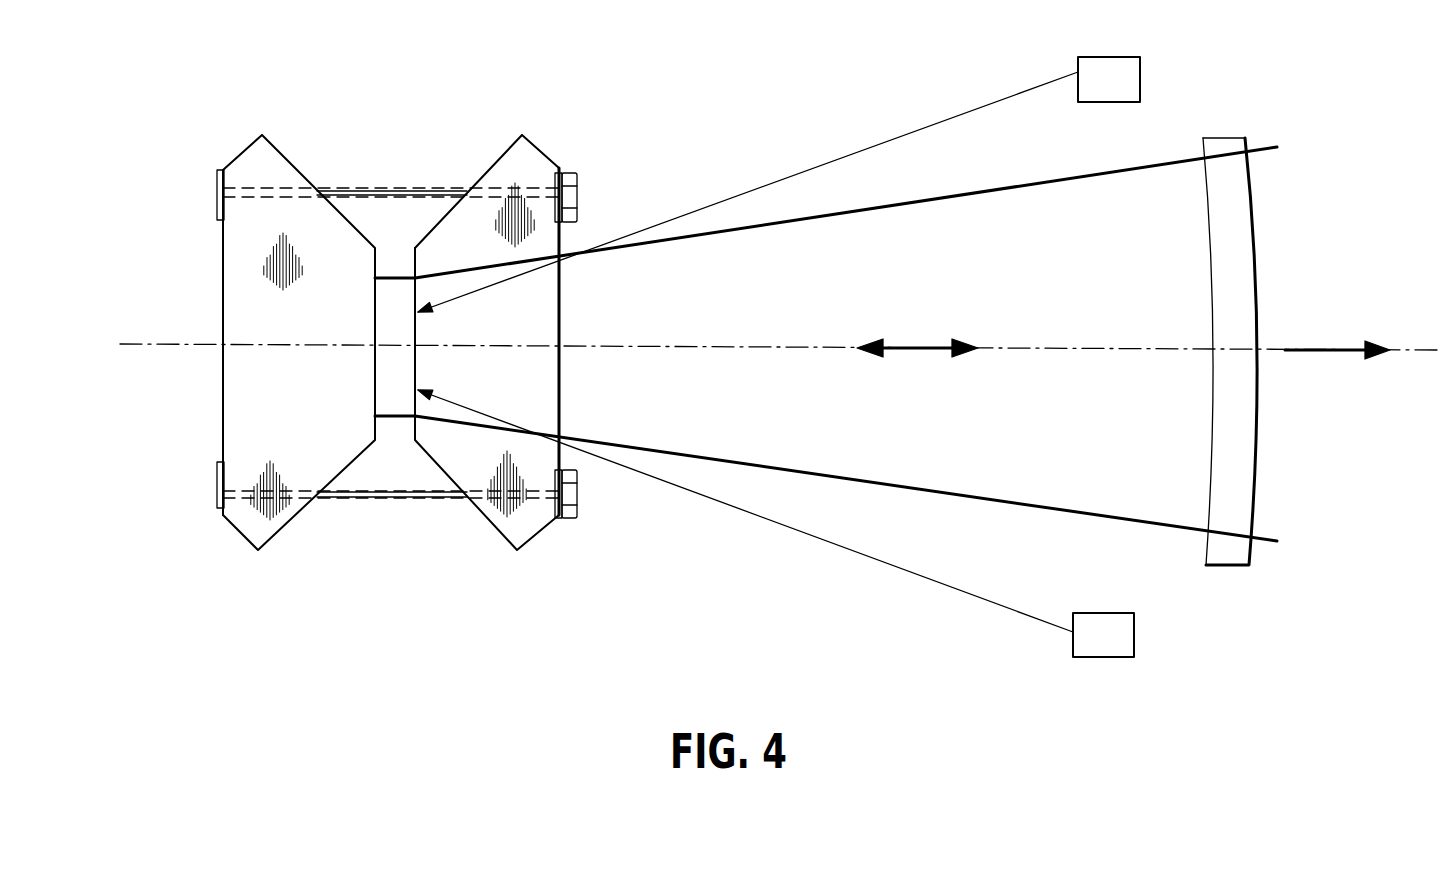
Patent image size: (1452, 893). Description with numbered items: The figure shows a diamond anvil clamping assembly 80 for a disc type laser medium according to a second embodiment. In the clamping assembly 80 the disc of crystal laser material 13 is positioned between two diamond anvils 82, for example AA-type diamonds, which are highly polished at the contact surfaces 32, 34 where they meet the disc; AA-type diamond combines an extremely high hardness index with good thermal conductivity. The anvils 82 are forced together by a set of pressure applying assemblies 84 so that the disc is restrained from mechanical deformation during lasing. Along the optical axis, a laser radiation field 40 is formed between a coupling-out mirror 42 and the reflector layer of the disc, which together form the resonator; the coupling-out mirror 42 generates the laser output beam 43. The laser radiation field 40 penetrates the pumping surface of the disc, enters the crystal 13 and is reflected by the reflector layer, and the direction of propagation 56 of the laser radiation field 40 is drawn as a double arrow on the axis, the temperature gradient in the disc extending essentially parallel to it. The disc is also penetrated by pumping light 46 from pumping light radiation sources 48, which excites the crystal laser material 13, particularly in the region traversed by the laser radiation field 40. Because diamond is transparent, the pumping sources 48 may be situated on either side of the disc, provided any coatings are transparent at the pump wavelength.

The crystal laser material 13 is at (410, 361).
The contact surface 32 is at (417, 360).
The contact surface 34 is at (375, 363).
The laser radiation field 40 is at (1057, 443).
The coupling-out mirror 42 is at (1254, 250).
The laser output beam 43 is at (1333, 352).
The pumping light 46 is at (922, 132).
The pumping light radiation source 48 is at (1140, 73).
The direction of propagation 56 is at (912, 350).
The diamond anvil clamping assembly 80 is at (322, 619).
The diamond anvil 82 is at (262, 133).
The pressure applying assembly 84 is at (607, 185).